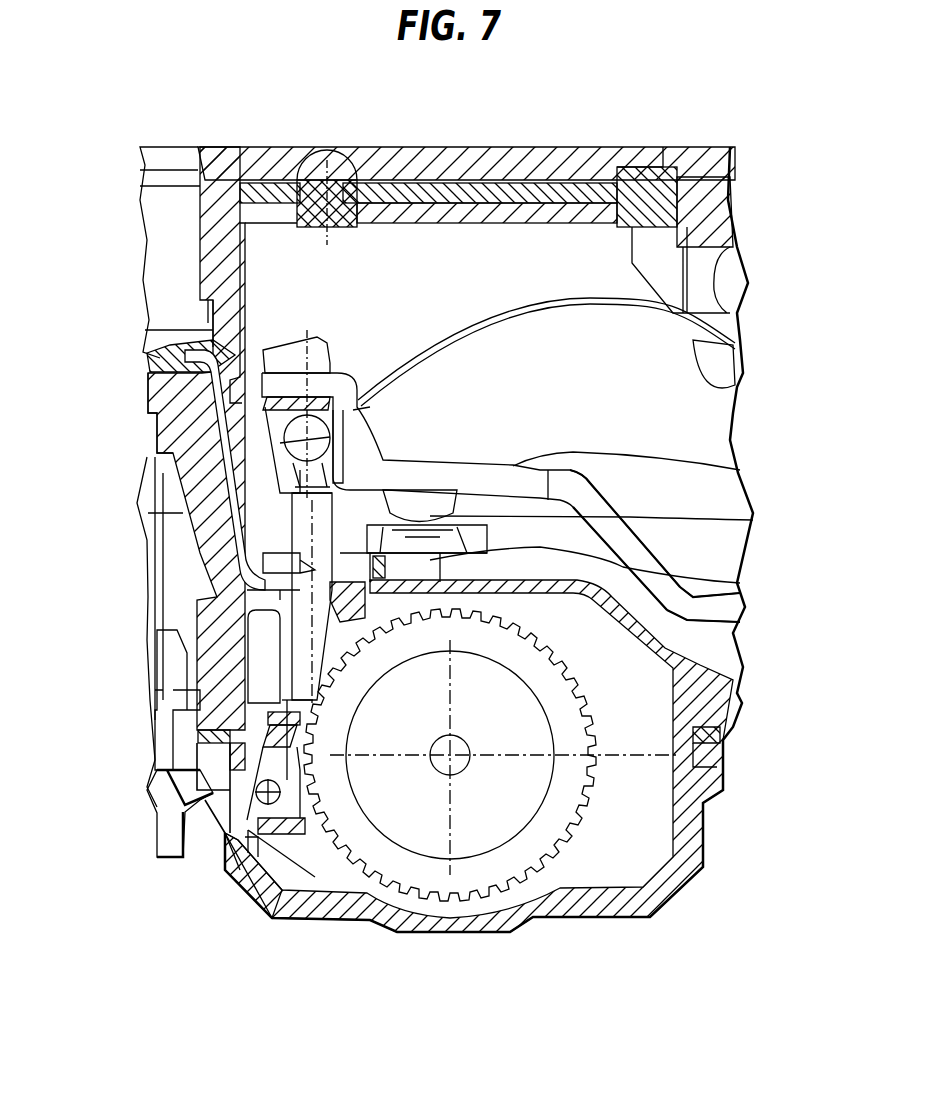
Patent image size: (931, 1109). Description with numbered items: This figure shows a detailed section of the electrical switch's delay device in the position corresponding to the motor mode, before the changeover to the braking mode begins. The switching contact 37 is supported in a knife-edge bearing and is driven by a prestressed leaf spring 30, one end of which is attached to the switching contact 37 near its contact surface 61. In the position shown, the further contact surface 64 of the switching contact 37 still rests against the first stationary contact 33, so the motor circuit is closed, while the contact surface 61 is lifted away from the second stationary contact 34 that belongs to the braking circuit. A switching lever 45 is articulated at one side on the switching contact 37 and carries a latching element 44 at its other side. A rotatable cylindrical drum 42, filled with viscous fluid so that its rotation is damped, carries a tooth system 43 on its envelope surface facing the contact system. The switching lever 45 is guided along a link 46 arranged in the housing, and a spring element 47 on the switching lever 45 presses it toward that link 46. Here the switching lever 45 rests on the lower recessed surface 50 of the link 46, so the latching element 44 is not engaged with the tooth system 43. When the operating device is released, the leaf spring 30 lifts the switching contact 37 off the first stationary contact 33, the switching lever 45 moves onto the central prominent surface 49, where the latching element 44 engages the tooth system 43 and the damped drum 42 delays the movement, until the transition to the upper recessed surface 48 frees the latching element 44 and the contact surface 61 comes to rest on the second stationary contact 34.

The leaf spring 30 is at (527, 308).
The first stationary contact 33 is at (742, 583).
The second stationary contact 34 is at (341, 147).
The switching contact 37 is at (740, 468).
The drum 42 is at (483, 830).
The tooth system 43 is at (335, 843).
The latching element 44 is at (278, 836).
The switching lever 45 is at (300, 598).
The link 46 is at (262, 686).
The spring element 47 is at (262, 785).
The upper recessed surface 48 is at (275, 656).
The central prominent surface 49 is at (157, 805).
The lower recessed surface 50 is at (225, 833).
The contact surface 61 is at (300, 348).
The further contact surface 64 is at (755, 520).